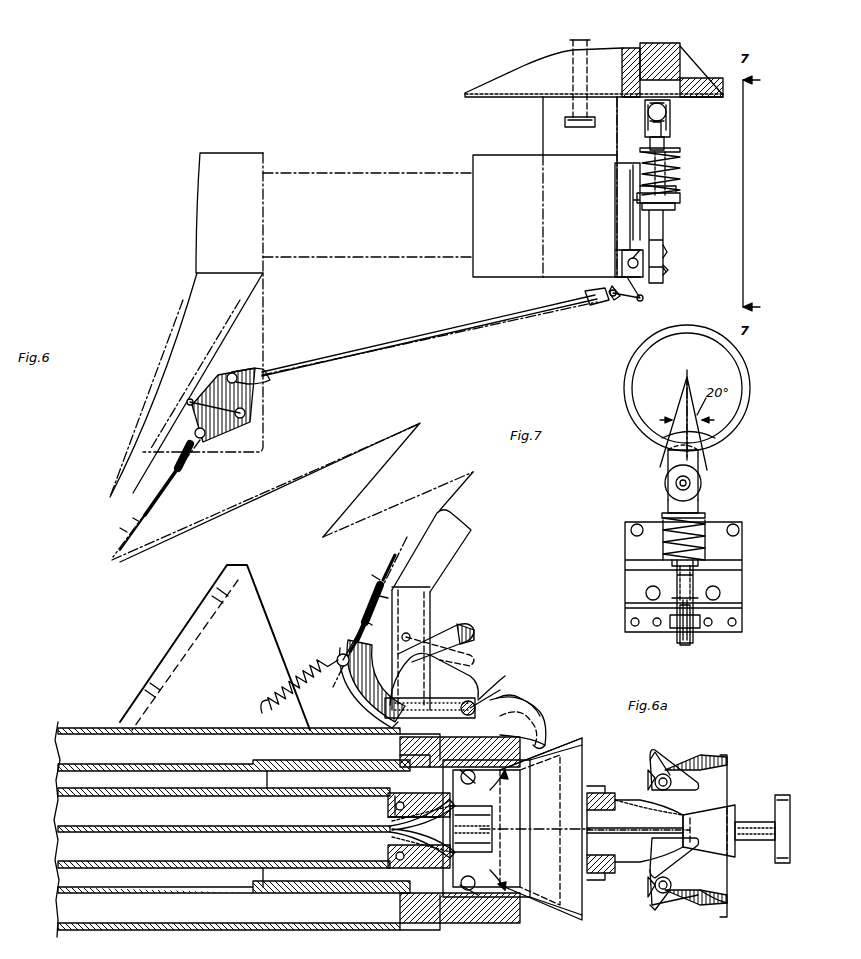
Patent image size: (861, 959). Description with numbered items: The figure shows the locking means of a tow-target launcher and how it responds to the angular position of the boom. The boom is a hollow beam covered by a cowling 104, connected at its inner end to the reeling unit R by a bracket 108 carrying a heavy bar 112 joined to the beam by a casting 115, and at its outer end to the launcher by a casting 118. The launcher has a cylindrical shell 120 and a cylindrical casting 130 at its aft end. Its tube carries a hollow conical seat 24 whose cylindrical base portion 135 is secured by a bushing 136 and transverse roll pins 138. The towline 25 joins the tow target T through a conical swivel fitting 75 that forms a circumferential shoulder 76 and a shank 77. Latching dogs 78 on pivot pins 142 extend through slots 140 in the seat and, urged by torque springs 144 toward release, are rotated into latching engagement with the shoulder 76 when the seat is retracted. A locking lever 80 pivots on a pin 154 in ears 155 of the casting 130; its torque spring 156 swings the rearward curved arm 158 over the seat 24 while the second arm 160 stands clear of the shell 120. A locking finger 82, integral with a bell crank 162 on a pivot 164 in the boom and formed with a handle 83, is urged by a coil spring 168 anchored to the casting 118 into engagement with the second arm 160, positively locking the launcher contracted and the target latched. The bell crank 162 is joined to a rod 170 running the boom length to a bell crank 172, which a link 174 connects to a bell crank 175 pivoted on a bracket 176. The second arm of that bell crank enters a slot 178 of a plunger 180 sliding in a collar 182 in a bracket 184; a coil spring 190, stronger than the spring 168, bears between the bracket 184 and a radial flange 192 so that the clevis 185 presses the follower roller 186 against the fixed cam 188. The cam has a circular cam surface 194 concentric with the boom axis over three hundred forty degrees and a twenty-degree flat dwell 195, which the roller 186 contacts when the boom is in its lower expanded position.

In FIG. 6, the reeling unit R is at (501, 98).
In FIG. 6, the fixed cam 188 is at (648, 52).
In FIG. 7, the fixed cam 188 is at (700, 370).
In FIG. 6, the roller 186 is at (665, 118).
In FIG. 7, the roller 186 is at (702, 483).
In FIG. 6, the clevis 185 is at (660, 140).
In FIG. 7, the clevis 185 is at (668, 508).
In FIG. 6, the radial flange 192 is at (668, 150).
In FIG. 7, the radial flange 192 is at (705, 515).
In FIG. 6, the coil spring 190 is at (668, 165).
In FIG. 7, the coil spring 190 is at (706, 522).
In FIG. 6, the bracket 184 is at (658, 198).
In FIG. 7, the bracket 184 is at (740, 556).
In FIG. 6, the collar 182 is at (665, 208).
In FIG. 7, the collar 182 is at (672, 578).
In FIG. 7, the plunger 180 is at (700, 585).
In FIG. 7, the slot 178 is at (695, 628).
In FIG. 6, the bracket 176 is at (622, 255).
In FIG. 6, the bell crank 175 is at (614, 283).
In FIG. 7, the bell crank 175 is at (676, 630).
In FIG. 6, the link 174 is at (443, 330).
In FIG. 6, the bell crank 172 is at (243, 430).
In FIG. 6, the rod 170 is at (165, 480).
In FIG. 6, the coil spring 168 is at (302, 668).
In FIG. 6, the pivot 164 is at (407, 633).
In FIG. 6, the bell crank 162 is at (355, 695).
In FIG. 6, the second arm 160 is at (415, 690).
In FIG. 6, the rearward curved arm 158 is at (540, 715).
In FIG. 6, the torque spring 156 is at (535, 705).
In FIG. 6, the ears 155 is at (475, 700).
In FIG. 6, the pin 154 is at (478, 706).
In FIG. 6, the locking lever 80 is at (490, 698).
In FIG. 6, the handle 83 is at (472, 625).
In FIG. 6, the locking finger 82 is at (395, 740).
In FIG. 6, the latching dogs 78 is at (547, 745).
In FIG. 6A, the latching dogs 78 is at (655, 752).
In FIG. 6, the shank 77 is at (495, 832).
In FIG. 6A, the shank 77 is at (755, 822).
In FIG. 6, the circumferential shoulder 76 is at (495, 815).
In FIG. 6A, the circumferential shoulder 76 is at (740, 818).
In FIG. 6, the conical swivel fitting 75 is at (395, 830).
In FIG. 6A, the conical swivel fitting 75 is at (712, 845).
In FIG. 6, the towline 25 is at (162, 826).
In FIG. 6A, the towline 25 is at (645, 828).
In FIG. 6, the conical seat 24 is at (530, 915).
In FIG. 6A, the conical seat 24 is at (735, 753).
In FIG. 6, the slots 140 is at (545, 755).
In FIG. 6A, the slots 140 is at (700, 910).
In FIG. 6A, the torque springs 144 is at (668, 748).
In FIG. 6A, the pivot pins 142 is at (655, 780).
In FIG. 6, the roll pins 138 is at (395, 866).
In FIG. 6, the bushing 136 is at (392, 805).
In FIG. 6, the cylindrical base portion 135 is at (395, 812).
In FIG. 6, the cylindrical casting 130 is at (475, 920).
In FIG. 6, the cylindrical shell 120 is at (237, 727).
In FIG. 6, the casting 118 is at (255, 612).
In FIG. 6, the casting 115 is at (250, 342).
In FIG. 6, the heavy bar 112 is at (392, 258).
In FIG. 6, the bracket 108 is at (530, 278).
In FIG. 6, the cowling 104 is at (462, 545).
In FIG. 7, the circular cam surface 194 is at (625, 380).
In FIG. 7, the flat dwell 195 is at (717, 437).
In FIG. 6A, the tow target T is at (780, 865).